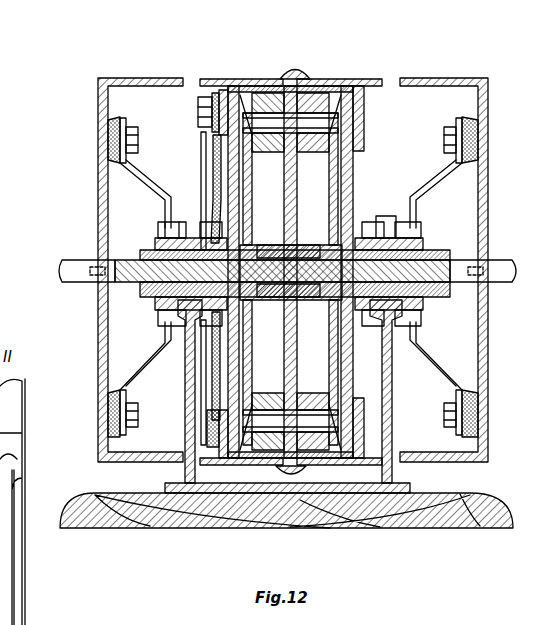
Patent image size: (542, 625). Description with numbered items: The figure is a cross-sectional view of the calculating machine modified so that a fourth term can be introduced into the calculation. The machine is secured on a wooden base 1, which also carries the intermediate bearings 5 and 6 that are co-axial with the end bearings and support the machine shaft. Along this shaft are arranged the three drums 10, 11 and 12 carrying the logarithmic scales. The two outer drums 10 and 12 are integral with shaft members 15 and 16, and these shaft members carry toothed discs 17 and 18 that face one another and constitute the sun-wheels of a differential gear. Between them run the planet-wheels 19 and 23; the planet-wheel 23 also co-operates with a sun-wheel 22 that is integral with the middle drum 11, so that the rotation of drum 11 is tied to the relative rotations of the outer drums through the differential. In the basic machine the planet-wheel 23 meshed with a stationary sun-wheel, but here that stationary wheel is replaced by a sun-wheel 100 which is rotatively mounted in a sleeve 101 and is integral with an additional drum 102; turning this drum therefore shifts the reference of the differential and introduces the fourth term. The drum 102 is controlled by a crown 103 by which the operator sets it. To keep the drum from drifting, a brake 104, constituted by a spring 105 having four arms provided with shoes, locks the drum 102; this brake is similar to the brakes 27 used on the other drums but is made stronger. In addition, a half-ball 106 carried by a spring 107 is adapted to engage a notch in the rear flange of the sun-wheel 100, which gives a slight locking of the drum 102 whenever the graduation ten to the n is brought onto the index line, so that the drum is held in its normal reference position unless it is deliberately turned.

The wooden base 1 is at (300, 528).
The intermediate bearing 5 is at (394, 416).
The intermediate bearing 6 is at (192, 398).
The drum 10 is at (418, 78).
The drum 11 is at (332, 82).
The drum 12 is at (148, 78).
The shaft member 15 is at (496, 272).
The shaft member 16 is at (78, 283).
The toothed disc 17 is at (420, 207).
The toothed disc 18 is at (258, 205).
The planet-wheel 19 is at (318, 150).
The sun-wheel 22 is at (364, 108).
The planet-wheel 23 is at (305, 98).
The brake 27 is at (482, 135).
The sun-wheel 100 is at (228, 88).
The sleeve 101 is at (150, 310).
The additional drum 102 is at (250, 90).
The crown 103 is at (294, 62).
The brake 104 is at (118, 168).
The spring 105 is at (198, 108).
The half-ball 106 is at (202, 172).
The spring 107 is at (218, 186).